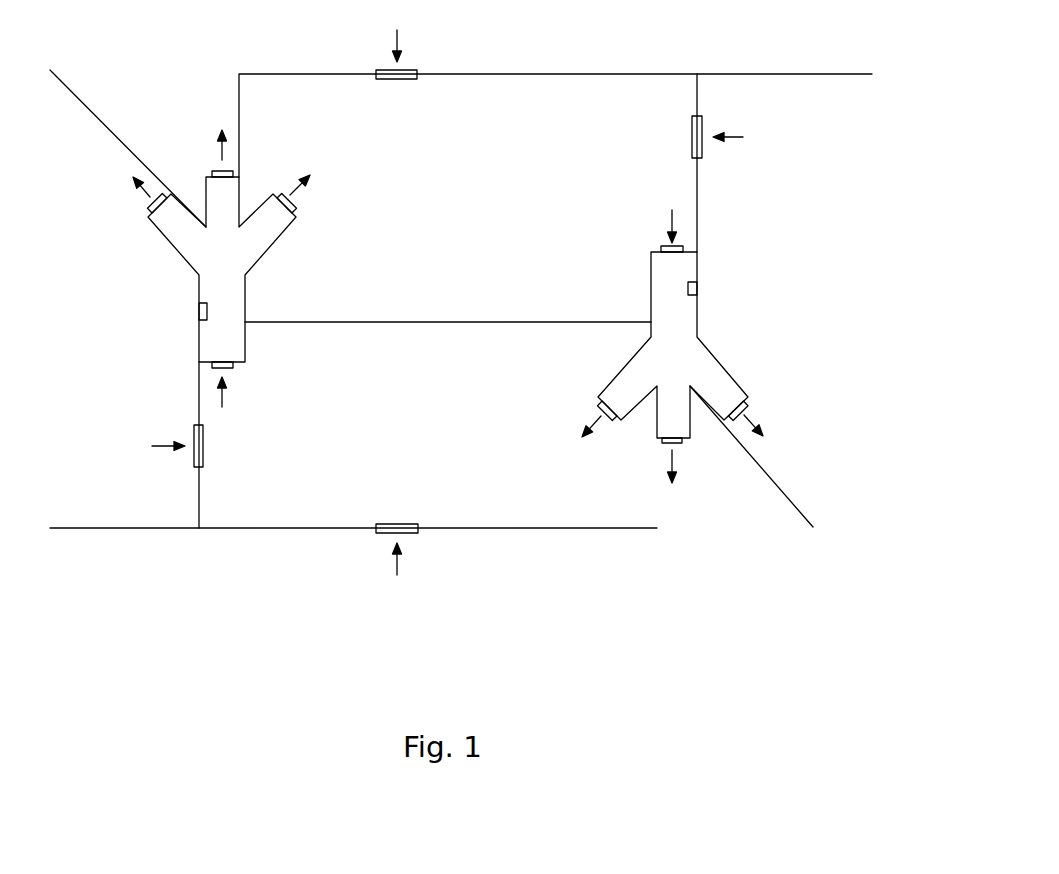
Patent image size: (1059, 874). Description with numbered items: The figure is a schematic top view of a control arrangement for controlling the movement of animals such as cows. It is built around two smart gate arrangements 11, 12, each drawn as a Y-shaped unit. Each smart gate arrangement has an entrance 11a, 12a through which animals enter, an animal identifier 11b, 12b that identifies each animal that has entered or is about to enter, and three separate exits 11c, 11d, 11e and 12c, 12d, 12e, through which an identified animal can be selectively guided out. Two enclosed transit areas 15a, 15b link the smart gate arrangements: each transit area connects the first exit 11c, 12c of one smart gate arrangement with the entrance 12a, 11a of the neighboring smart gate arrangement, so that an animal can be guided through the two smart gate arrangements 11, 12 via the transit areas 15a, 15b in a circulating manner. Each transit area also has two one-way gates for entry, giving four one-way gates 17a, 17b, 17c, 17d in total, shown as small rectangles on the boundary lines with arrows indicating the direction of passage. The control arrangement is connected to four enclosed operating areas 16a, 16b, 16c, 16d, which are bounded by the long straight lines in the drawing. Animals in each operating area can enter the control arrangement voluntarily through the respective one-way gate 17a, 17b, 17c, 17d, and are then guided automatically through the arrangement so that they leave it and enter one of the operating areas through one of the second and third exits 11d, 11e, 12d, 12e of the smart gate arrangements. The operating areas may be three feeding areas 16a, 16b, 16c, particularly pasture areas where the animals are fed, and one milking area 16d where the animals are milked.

The smart gate arrangement 11 is at (244, 293).
The entrance 11a is at (228, 368).
The animal identifier 11b is at (199, 313).
The first exit 11c is at (293, 205).
The second exit 11d is at (218, 168).
The third exit 11e is at (150, 205).
The smart gate arrangement 12 is at (651, 302).
The entrance 12a is at (663, 245).
The animal identifier 12b is at (697, 289).
The first exit 12c is at (600, 404).
The second exit 12d is at (677, 442).
The third exit 12e is at (740, 405).
The transit area 15a is at (417, 423).
The transit area 15b is at (459, 160).
The operating area 16a is at (128, 299).
The operating area 16b is at (772, 300).
The operating area 16c is at (353, 581).
The milking area 16d is at (555, 91).
The one-way gate 17a is at (203, 455).
The one-way gate 17b is at (692, 132).
The one-way gate 17c is at (397, 525).
The one-way gate 17d is at (405, 80).